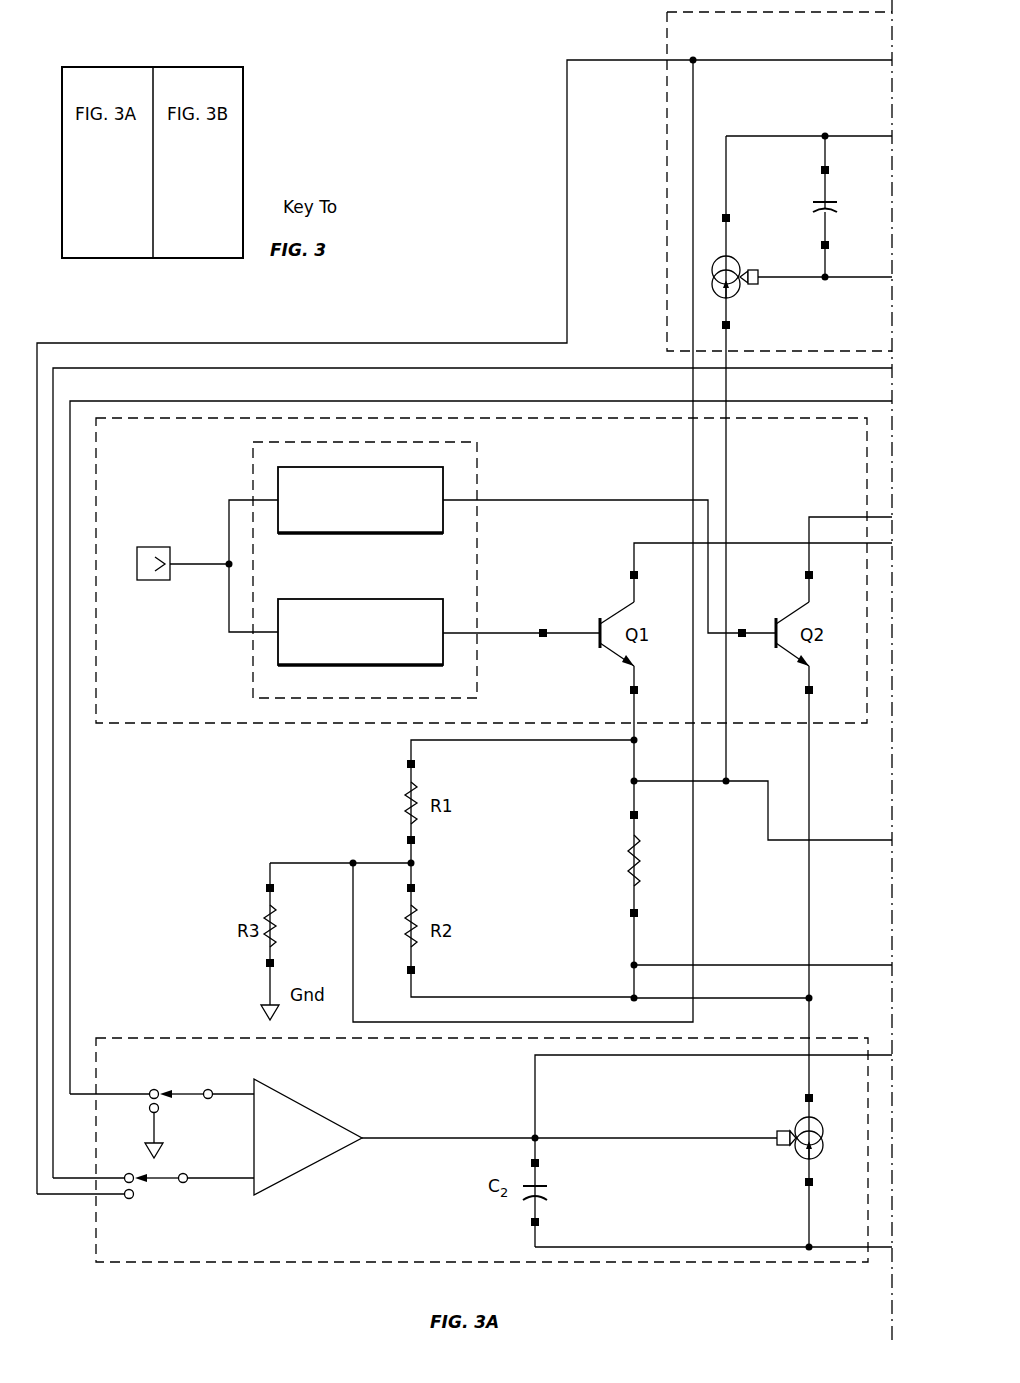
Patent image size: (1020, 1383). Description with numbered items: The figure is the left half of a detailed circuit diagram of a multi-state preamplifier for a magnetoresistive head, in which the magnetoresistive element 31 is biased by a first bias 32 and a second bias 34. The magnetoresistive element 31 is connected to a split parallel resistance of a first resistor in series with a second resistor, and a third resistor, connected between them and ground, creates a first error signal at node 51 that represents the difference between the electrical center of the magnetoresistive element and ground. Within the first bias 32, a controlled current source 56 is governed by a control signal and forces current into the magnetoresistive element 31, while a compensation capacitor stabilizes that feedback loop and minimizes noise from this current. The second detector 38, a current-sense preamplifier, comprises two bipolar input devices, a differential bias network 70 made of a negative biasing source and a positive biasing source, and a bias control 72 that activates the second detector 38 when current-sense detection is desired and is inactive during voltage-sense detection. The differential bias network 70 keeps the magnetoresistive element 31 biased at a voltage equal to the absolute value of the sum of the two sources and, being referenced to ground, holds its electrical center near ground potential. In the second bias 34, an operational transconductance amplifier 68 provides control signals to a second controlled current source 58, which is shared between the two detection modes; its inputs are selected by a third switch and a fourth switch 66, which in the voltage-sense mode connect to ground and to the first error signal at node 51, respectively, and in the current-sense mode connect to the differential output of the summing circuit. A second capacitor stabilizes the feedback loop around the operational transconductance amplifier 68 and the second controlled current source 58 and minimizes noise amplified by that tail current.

The node 51 is at (695, 64).
The first bias BIASa 32 is at (667, 182).
The controlled current source Jb 56 is at (735, 293).
The second detector DET2 38 is at (196, 724).
The differential bias network 70 is at (478, 553).
The bias control HVBIAS 72 is at (160, 582).
The MR element Rmr 31 is at (628, 868).
The second bias BIASb 34 is at (258, 1263).
The operational transconductance amplifier OTA1 68 is at (150, 1090).
The switch SW4 66 is at (170, 1192).
The controlled current source Jc 58 is at (822, 1154).